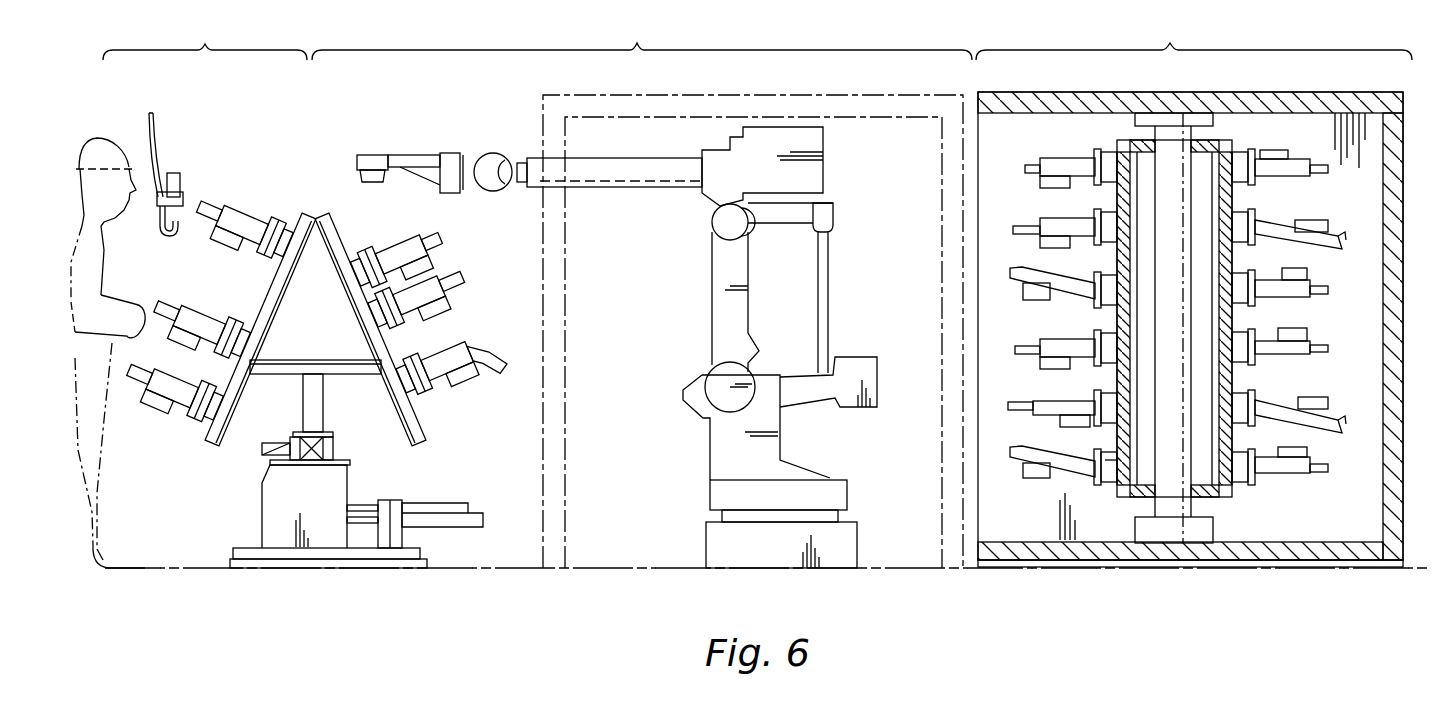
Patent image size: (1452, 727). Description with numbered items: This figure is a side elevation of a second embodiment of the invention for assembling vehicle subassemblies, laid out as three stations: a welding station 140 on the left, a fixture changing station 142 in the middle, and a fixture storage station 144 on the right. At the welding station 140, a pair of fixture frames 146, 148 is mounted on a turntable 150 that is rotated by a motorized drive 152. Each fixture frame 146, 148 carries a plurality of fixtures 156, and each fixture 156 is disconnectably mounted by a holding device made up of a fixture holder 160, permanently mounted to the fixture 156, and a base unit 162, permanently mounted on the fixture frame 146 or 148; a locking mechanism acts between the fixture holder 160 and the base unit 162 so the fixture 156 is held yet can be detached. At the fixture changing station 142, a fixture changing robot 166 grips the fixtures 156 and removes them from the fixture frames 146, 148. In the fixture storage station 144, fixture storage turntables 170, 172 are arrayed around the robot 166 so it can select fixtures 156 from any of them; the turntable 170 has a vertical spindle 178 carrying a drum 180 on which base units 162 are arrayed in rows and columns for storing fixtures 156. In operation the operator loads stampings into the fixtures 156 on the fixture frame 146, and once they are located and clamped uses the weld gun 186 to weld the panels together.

The welding station 140 is at (205, 38).
The fixture changing station 142 is at (642, 38).
The fixture storage station 144 is at (1194, 40).
The fixture frame 146 is at (214, 456).
The fixture frame 148 is at (415, 432).
The turntable 150 is at (281, 372).
The motorized drive 152 is at (322, 532).
The fixture 156 is at (262, 216).
The fixture holder 160 is at (288, 230).
The base unit 162 is at (301, 220).
The fixture changing robot 166 is at (716, 307).
The fixture storage turntable 170 is at (1412, 84).
The fixture storage turntable 172 is at (872, 92).
The vertical spindle 178 is at (1200, 470).
The drum 180 is at (1115, 440).
The weld gun 186 is at (166, 214).